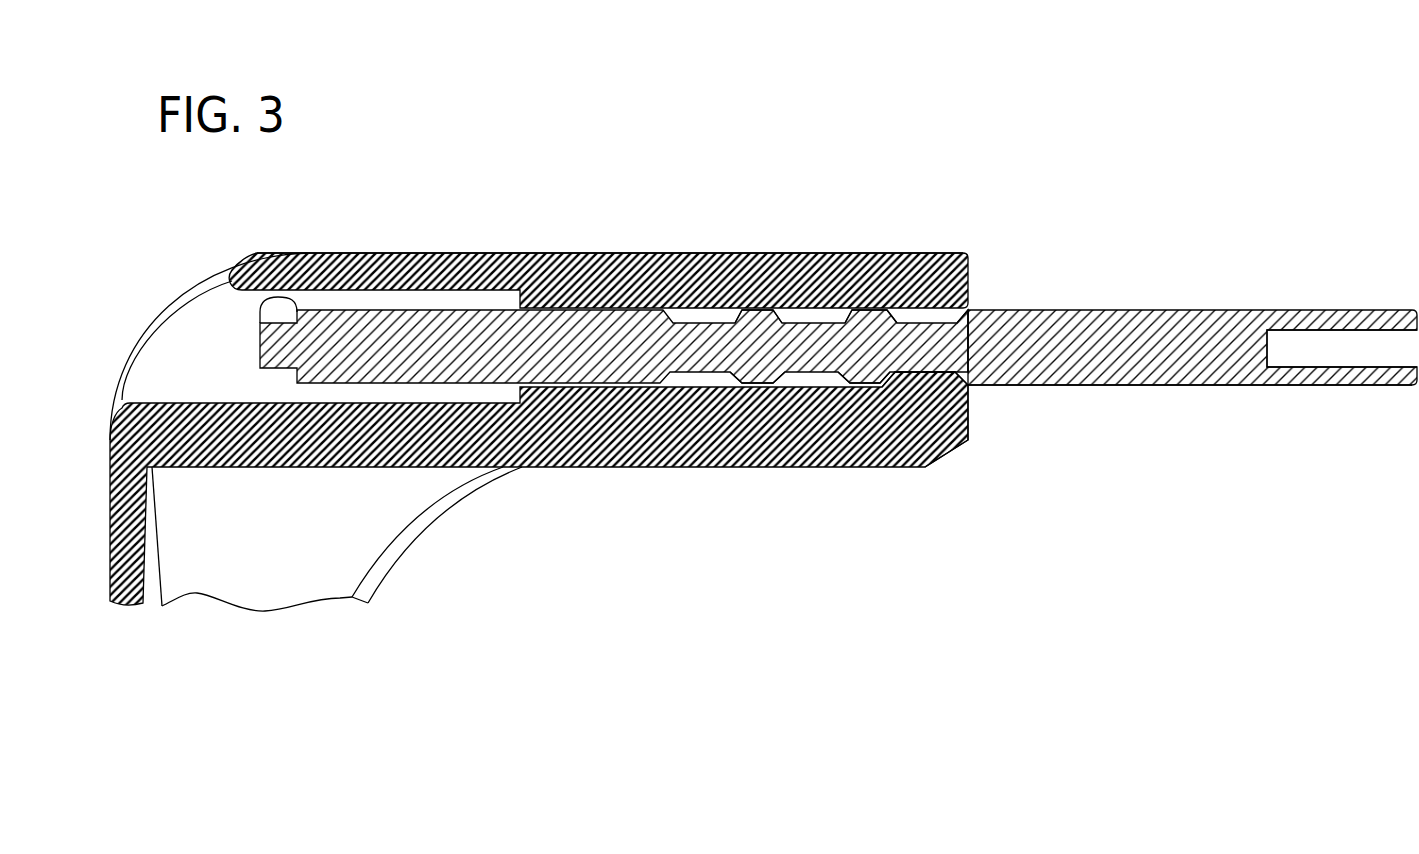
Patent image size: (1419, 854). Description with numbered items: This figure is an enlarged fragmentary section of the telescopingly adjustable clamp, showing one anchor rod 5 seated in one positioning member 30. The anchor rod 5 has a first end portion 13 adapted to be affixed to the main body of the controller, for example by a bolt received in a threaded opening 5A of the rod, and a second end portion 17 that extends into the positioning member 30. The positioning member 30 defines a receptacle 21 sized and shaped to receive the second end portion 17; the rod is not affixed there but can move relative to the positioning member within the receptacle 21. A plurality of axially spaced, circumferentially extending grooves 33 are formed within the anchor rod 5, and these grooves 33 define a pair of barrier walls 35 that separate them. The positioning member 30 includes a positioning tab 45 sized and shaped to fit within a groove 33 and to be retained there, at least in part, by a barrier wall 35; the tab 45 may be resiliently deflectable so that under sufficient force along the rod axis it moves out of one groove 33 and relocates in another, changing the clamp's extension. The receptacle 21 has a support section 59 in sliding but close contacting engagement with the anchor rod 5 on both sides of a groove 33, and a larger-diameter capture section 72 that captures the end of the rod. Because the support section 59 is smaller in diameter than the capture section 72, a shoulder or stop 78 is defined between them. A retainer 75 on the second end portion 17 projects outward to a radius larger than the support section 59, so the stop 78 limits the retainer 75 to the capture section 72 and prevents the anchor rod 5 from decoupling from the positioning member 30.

The anchor rod 5 is at (1132, 413).
The threaded opening 5A is at (1418, 343).
The first end portion 13 is at (1187, 355).
The second end portion 17 is at (357, 347).
The receptacle 21 is at (953, 313).
The positioning member 30 is at (660, 213).
The grooves 33 is at (927, 317).
The barrier walls 35 is at (872, 382).
The positioning tab 45 is at (968, 423).
The support section 59 is at (736, 425).
The capture section 72 is at (219, 336).
The retainer 75 is at (276, 305).
The stop 78 is at (518, 300).